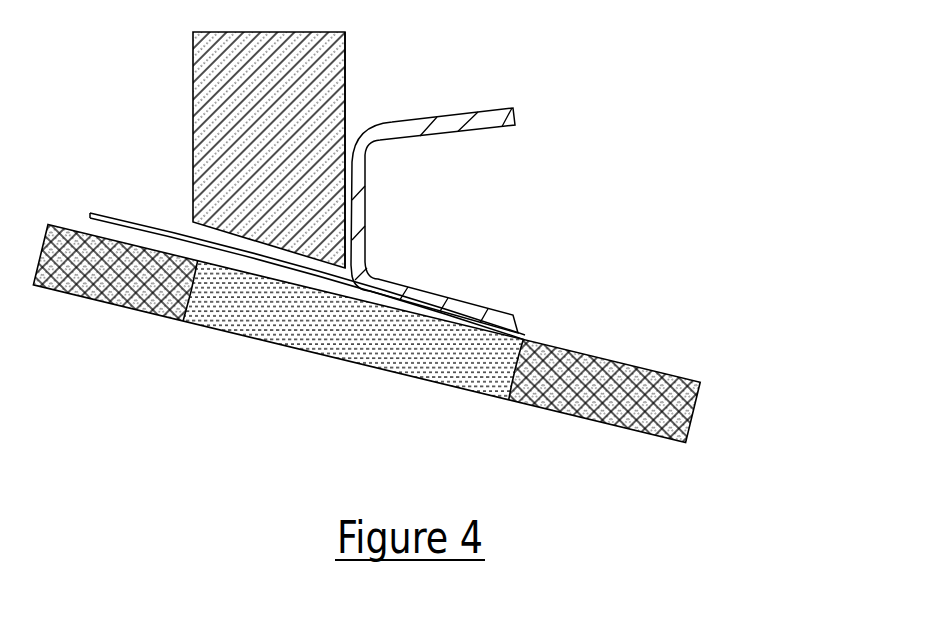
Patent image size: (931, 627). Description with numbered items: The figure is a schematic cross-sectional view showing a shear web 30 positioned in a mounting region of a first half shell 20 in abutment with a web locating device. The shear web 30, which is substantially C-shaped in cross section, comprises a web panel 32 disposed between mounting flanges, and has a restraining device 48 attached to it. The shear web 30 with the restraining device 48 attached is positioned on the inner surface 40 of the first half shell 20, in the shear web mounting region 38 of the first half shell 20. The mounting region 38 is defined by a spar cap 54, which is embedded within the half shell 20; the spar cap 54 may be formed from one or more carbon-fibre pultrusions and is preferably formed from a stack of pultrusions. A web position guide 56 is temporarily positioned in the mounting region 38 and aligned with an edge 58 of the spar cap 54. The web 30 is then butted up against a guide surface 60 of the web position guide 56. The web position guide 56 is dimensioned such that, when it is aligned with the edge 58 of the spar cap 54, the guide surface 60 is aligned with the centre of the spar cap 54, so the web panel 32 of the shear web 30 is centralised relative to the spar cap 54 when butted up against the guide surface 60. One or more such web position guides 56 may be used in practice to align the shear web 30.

The first half shell 20 is at (722, 420).
The second shear web 30 is at (550, 113).
The web panel 32 is at (360, 205).
The first mounting region 38 is at (383, 305).
The inner surface 40 is at (602, 358).
The restraining device 48 is at (145, 227).
The spar cap 54 is at (317, 340).
The web position guide 56 is at (205, 63).
The edge 58 is at (189, 313).
The guide surface 60 is at (345, 64).